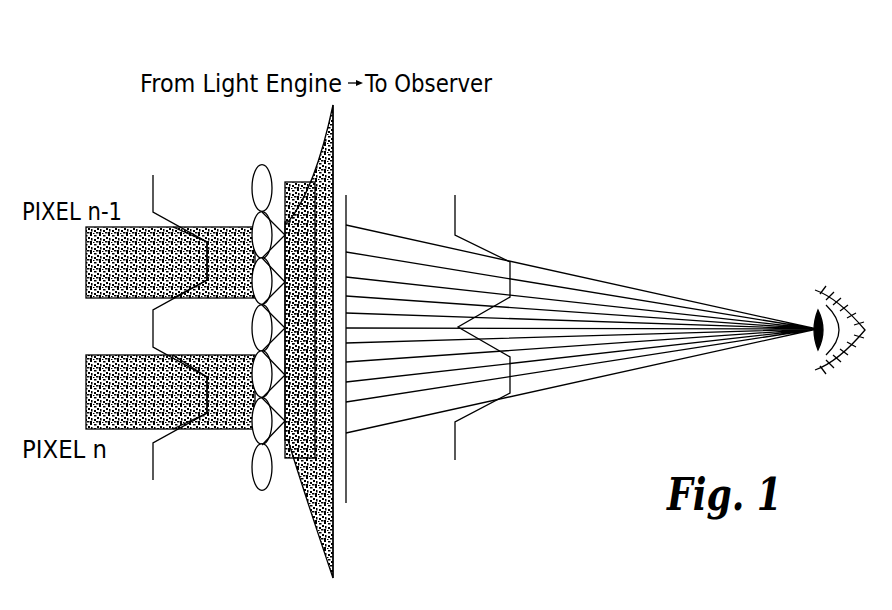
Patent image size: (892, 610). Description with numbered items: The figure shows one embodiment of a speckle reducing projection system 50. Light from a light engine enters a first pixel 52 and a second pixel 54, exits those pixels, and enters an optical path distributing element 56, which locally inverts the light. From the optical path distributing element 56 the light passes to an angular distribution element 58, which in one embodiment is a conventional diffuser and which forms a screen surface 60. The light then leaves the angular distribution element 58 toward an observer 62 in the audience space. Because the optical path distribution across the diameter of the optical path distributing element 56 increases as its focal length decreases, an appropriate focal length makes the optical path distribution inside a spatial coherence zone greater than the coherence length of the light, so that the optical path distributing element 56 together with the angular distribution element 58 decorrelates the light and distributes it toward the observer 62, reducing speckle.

The speckle reducing projection system 50 is at (464, 535).
The first pixel 52 is at (84, 267).
The second pixel 54 is at (84, 380).
The optical path distributing element 56 is at (257, 470).
The angular distribution element 58 is at (292, 466).
The screen surface 60 is at (362, 487).
The observer 62 is at (837, 368).